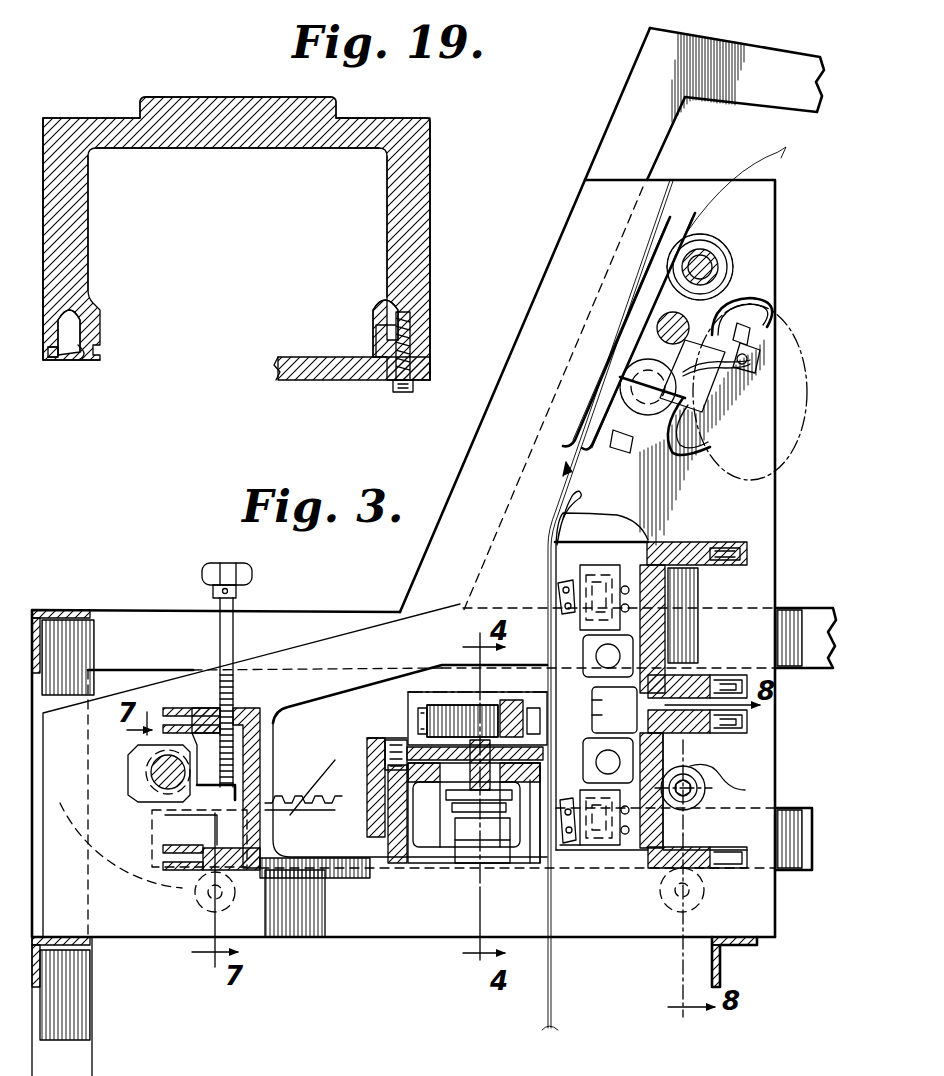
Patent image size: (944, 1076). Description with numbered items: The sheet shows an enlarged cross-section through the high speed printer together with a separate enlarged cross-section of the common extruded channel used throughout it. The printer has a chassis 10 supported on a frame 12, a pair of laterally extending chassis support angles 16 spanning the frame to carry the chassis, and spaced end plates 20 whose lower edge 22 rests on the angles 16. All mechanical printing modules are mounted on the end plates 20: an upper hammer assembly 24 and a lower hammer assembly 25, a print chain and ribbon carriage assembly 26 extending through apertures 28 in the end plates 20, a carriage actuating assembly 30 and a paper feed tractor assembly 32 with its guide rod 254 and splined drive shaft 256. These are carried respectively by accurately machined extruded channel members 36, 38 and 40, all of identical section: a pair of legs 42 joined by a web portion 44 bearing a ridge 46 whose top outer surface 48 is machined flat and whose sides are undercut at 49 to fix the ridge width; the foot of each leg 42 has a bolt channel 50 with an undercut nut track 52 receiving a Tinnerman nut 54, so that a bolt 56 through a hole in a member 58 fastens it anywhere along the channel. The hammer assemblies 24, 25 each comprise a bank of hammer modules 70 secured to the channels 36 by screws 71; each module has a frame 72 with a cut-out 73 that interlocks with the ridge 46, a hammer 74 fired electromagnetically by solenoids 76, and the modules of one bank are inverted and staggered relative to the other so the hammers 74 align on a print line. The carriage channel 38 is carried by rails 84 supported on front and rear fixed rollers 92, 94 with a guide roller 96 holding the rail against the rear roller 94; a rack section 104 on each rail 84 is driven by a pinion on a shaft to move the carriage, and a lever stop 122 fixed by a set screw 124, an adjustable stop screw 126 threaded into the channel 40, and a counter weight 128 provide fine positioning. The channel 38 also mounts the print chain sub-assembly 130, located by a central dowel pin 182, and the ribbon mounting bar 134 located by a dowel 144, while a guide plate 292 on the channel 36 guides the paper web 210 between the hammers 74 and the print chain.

In FIG. 3, the chassis 10 is at (362, 948).
In FIG. 3, the frame 12 is at (88, 1006).
In FIG. 3, the chassis support angles 16 is at (62, 940).
In FIG. 3, the end plates 20 is at (594, 276).
In FIG. 3, the lower edge 22 is at (392, 940).
In FIG. 3, the hammer assembly 24 is at (676, 650).
In FIG. 3, the hammer assembly 25 is at (688, 808).
In FIG. 3, the print chain and ribbon carriage assembly 26 is at (393, 726).
In FIG. 3, the apertures 28 is at (292, 706).
In FIG. 3, the carriage actuating assembly 30 is at (190, 676).
In FIG. 3, the paper feed tractor assembly 32 is at (718, 236).
In FIG. 19, the channel member 36 is at (408, 104).
In FIG. 3, the channel member 36 is at (684, 692).
In FIG. 19, the channel member 38 is at (410, 103).
In FIG. 3, the channel member 38 is at (446, 790).
In FIG. 19, the channel member 40 is at (410, 103).
In FIG. 3, the channel member 40 is at (250, 712).
In FIG. 19, the legs 42 is at (78, 238).
In FIG. 19, the web portion 44 is at (217, 140).
In FIG. 19, the ridge 46 is at (158, 98).
In FIG. 19, the top outer surface 48 is at (244, 97).
In FIG. 19, the undercut 49 is at (336, 114).
In FIG. 19, the bolt channel 50 is at (90, 332).
In FIG. 19, the nut track 52 is at (78, 360).
In FIG. 19, the Tinnerman nut 54 is at (428, 330).
In FIG. 19, the bolt 56 is at (393, 390).
In FIG. 19, the member 58 is at (325, 357).
In FIG. 3, the hammer modules 70 is at (588, 570).
In FIG. 3, the screws 71 is at (668, 542).
In FIG. 3, the frame 72 is at (633, 700).
In FIG. 3, the cut-out 73 is at (640, 590).
In FIG. 3, the hammer 74 is at (547, 693).
In FIG. 3, the solenoids 76 is at (590, 852).
In FIG. 3, the rail 84 is at (300, 812).
In FIG. 3, the front fixed roller 92 is at (194, 900).
In FIG. 3, the rear fixed roller 94 is at (700, 893).
In FIG. 3, the guide roller 96 is at (740, 790).
In FIG. 3, the rack section 104 is at (292, 792).
In FIG. 3, the lever stop 122 is at (202, 838).
In FIG. 3, the set screw 124 is at (130, 772).
In FIG. 3, the adjustable stop screw 126 is at (234, 636).
In FIG. 3, the counter weight 128 is at (122, 812).
In FIG. 3, the print chain sub-assembly 130 is at (468, 690).
In FIG. 3, the mounting bar 134 is at (366, 830).
In FIG. 3, the dowel 144 is at (370, 786).
In FIG. 3, the dowel pin 182 is at (463, 840).
In FIG. 3, the paper web 210 is at (553, 1000).
In FIG. 3, the guide rod 254 is at (672, 322).
In FIG. 3, the splined drive shaft 256 is at (704, 270).
In FIG. 3, the guide plate 292 is at (577, 503).